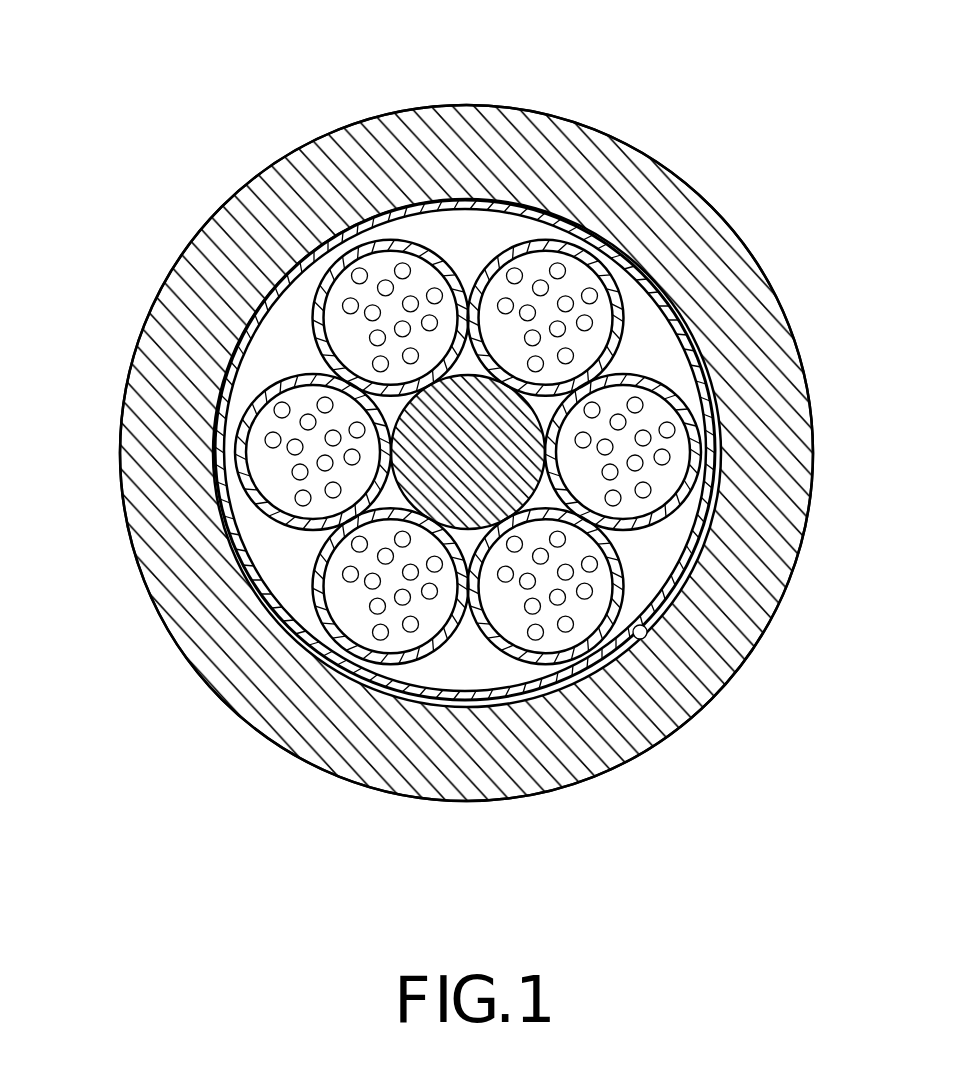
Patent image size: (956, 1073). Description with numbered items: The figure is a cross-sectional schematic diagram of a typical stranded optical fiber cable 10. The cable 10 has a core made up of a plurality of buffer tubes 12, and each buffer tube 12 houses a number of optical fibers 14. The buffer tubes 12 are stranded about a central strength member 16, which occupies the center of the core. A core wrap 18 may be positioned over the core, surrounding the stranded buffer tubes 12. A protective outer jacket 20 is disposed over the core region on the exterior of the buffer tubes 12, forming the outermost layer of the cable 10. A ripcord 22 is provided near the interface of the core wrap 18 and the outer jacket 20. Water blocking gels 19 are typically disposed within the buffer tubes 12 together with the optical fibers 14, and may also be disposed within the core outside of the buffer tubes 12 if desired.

The cable 10 is at (223, 128).
The buffer tubes 12 is at (415, 242).
The optical fibers 14 is at (520, 270).
The central strength member 16 is at (320, 323).
The core wrap 18 is at (667, 302).
The water blocking gels 19 is at (673, 467).
The protective outer jacket 20 is at (335, 133).
The ripcord 22 is at (647, 632).